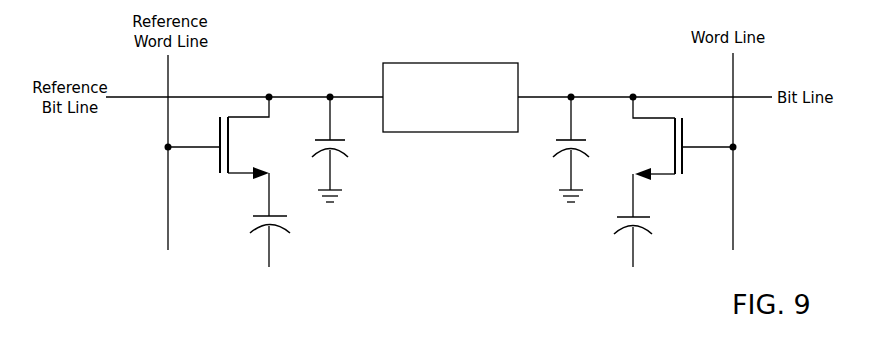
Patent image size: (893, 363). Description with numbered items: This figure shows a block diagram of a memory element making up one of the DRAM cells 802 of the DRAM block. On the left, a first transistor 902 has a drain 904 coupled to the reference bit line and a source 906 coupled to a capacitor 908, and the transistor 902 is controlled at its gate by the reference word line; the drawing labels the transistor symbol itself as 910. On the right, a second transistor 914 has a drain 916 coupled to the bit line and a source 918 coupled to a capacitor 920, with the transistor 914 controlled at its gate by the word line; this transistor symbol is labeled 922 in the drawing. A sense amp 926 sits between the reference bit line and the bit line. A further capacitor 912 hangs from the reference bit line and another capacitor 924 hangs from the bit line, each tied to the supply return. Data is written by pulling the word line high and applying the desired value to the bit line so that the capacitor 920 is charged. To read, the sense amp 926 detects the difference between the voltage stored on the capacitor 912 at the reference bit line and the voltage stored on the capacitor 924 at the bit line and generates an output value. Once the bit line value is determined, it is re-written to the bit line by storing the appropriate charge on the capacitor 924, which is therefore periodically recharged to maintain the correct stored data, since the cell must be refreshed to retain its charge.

The memory cell 802 is at (131, 226).
The first transistor 902 is at (240, 193).
The drain 904 is at (272, 106).
The source 906 is at (268, 171).
The capacitor 908 is at (278, 213).
The reference access transistor 910 is at (219, 131).
The capacitor 912 is at (340, 138).
The second transistor 914 is at (661, 193).
The drain 916 is at (630, 106).
The source 918 is at (637, 168).
The capacitor 920 is at (626, 213).
The access transistor 922 is at (684, 130).
The capacitor 924 is at (563, 138).
The sense amp 926 is at (473, 62).